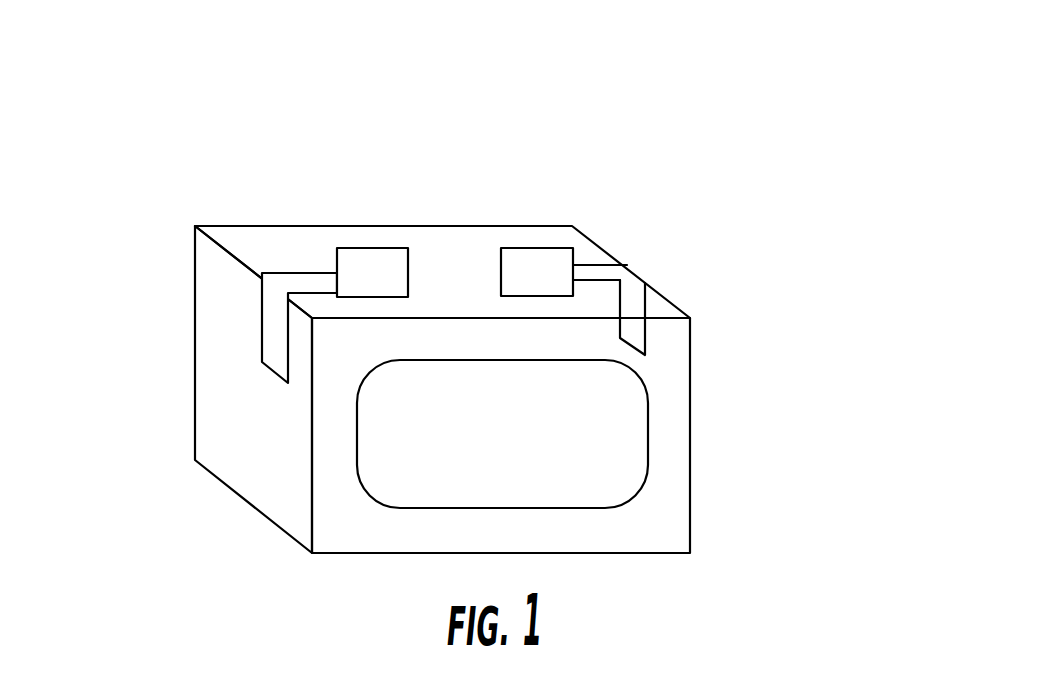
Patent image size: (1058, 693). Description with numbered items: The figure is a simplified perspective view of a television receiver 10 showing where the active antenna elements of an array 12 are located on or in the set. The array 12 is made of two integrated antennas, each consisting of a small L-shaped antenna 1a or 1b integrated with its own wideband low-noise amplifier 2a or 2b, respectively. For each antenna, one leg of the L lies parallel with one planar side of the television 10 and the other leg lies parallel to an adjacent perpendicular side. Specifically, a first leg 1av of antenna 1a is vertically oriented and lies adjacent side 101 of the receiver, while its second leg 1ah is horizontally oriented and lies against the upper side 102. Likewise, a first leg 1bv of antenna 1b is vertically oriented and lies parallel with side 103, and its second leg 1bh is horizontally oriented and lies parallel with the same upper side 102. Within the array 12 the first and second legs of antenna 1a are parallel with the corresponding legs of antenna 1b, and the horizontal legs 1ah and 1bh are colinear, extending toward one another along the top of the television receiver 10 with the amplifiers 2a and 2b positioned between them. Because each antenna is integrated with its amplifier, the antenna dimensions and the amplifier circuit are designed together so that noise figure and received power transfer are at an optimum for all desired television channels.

The array 12 is at (645, 125).
The television receiver 10 is at (419, 339).
The side 101 is at (212, 455).
The upper side 102 is at (285, 240).
The side 103 is at (693, 380).
The L-shaped antenna 1a is at (205, 231).
The second leg of antenna 1a 1ah is at (300, 272).
The first leg of antenna 1a 1av is at (262, 332).
The L-shaped antenna 1b is at (680, 252).
The second leg of antenna 1b 1bh is at (590, 265).
The first leg of antenna 1b 1bv is at (647, 303).
The wideband low-noise amplifier 2a is at (383, 262).
The wideband low-noise amplifier 2b is at (529, 258).